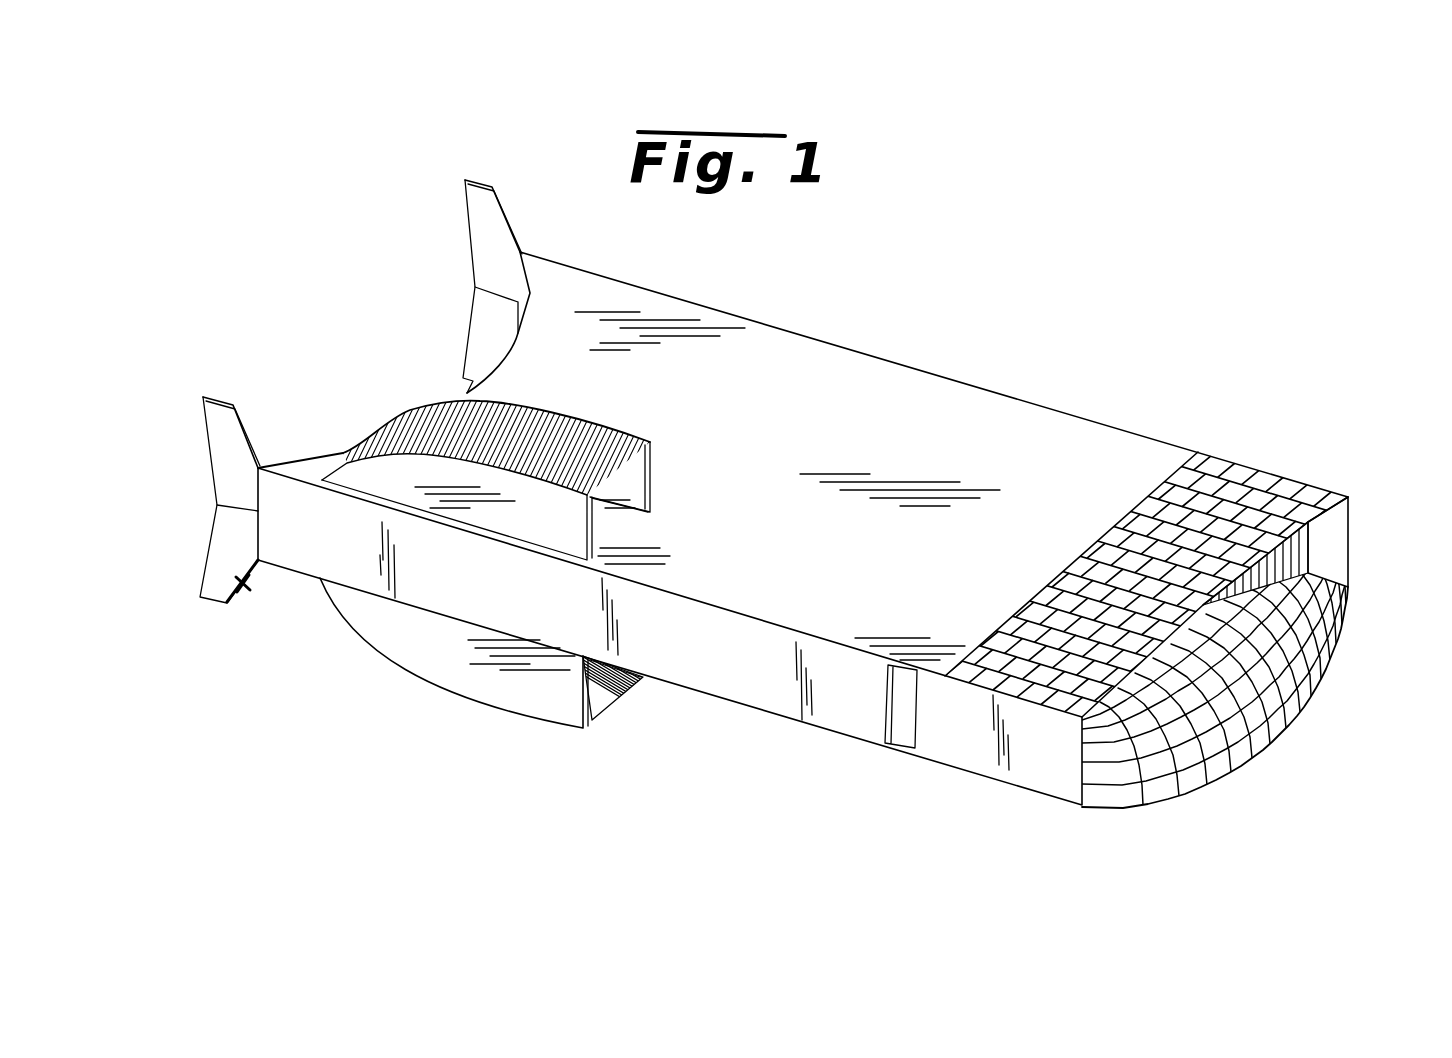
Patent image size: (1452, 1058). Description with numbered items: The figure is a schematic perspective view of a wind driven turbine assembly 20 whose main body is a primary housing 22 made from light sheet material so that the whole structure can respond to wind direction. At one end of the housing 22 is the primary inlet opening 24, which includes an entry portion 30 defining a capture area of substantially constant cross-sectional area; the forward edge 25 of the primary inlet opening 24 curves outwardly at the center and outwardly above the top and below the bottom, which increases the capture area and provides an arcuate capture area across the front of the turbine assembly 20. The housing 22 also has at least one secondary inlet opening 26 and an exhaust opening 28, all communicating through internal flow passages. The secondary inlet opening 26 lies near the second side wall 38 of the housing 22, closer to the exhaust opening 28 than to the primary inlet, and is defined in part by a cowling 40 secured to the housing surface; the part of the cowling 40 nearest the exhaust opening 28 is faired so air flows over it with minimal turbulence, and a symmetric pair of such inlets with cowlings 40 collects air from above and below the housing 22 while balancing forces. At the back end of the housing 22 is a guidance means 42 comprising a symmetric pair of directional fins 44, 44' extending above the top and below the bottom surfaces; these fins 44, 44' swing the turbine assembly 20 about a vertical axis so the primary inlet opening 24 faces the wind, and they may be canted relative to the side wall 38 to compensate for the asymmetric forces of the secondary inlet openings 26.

The wind driven turbine assembly 20 is at (1128, 466).
The primary housing 22 is at (912, 387).
The primary inlet opening 24 is at (1208, 750).
The forward edge 25 is at (1290, 707).
The secondary inlet opening 26 is at (597, 508).
The exhaust opening 28 is at (468, 390).
The entry portion 30 is at (1342, 535).
The second side wall 38 is at (832, 720).
The cowling 40 is at (430, 658).
The guidance means 42 is at (243, 595).
The directional fin 44 is at (340, 377).
The directional fin 44' is at (311, 458).